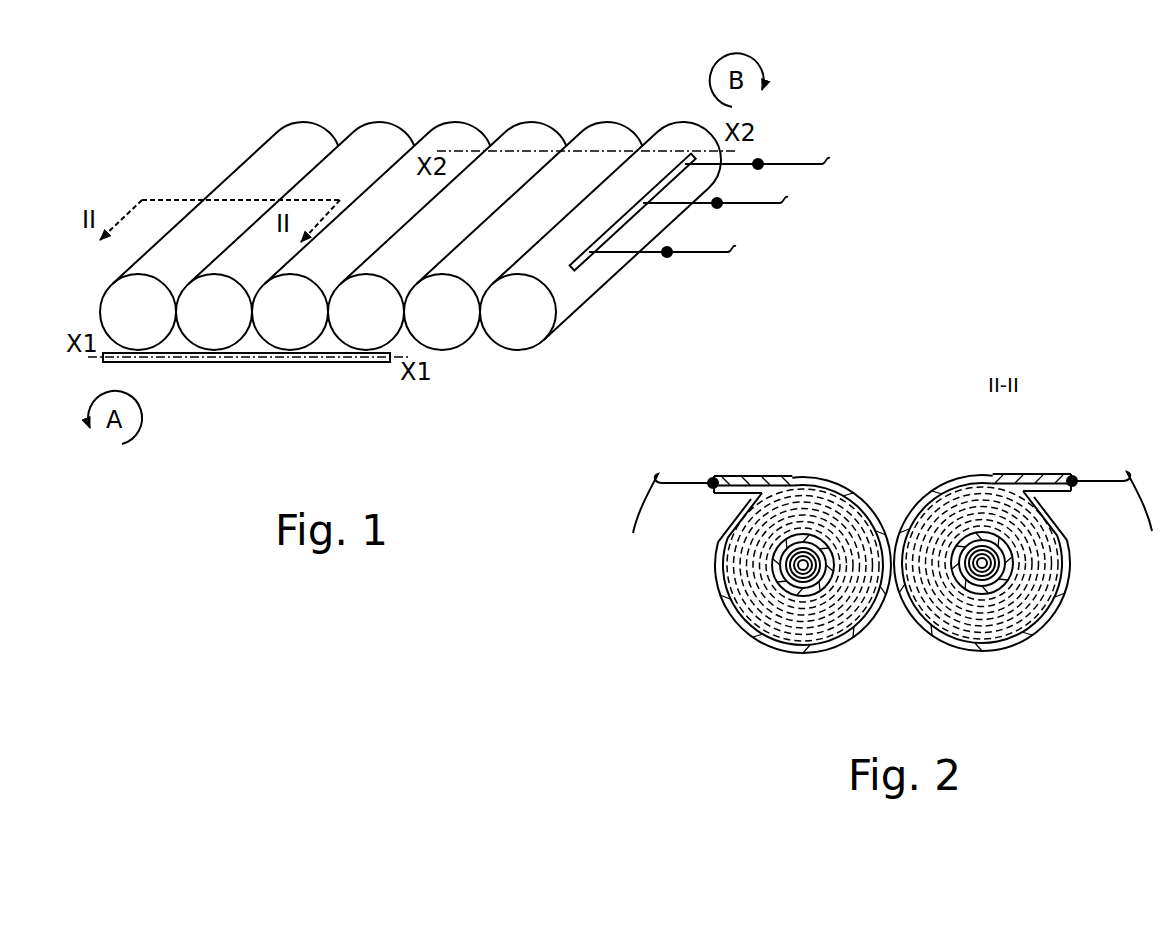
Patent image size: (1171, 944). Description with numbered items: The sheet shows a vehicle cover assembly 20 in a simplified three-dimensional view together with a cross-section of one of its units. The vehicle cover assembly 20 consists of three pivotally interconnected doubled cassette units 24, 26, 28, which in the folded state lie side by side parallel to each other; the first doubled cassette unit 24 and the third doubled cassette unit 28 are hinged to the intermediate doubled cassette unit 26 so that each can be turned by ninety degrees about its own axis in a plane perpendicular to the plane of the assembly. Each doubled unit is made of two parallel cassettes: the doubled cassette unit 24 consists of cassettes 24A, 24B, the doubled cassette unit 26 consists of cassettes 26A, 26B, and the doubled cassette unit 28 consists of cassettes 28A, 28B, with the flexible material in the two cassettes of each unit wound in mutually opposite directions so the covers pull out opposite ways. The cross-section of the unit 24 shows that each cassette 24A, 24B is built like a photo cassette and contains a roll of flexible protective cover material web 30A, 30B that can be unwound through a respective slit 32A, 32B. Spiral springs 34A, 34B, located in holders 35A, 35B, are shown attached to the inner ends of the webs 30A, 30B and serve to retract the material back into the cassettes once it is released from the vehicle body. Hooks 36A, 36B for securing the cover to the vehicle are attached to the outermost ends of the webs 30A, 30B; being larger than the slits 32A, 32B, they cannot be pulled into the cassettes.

In FIG. 1, the vehicle cover assembly 20 is at (526, 79).
In FIG. 1, the doubled cassette unit 24 is at (361, 113).
In FIG. 1, the cassette 24A is at (292, 150).
In FIG. 2, the cassette 24A is at (857, 483).
In FIG. 1, the cassette 24B is at (357, 150).
In FIG. 2, the cassette 24B is at (940, 485).
In FIG. 1, the doubled cassette unit 26 is at (488, 117).
In FIG. 1, the cassette 26A is at (317, 267).
In FIG. 1, the cassette 26B is at (398, 268).
In FIG. 1, the doubled cassette unit 28 is at (643, 110).
In FIG. 1, the cassette 28A is at (490, 267).
In FIG. 1, the cassette 28B is at (555, 260).
In FIG. 2, the flexible protective cover material web 30A is at (803, 503).
In FIG. 2, the flexible protective cover material web 30B is at (1047, 582).
In FIG. 2, the slit 32A is at (745, 478).
In FIG. 2, the slit 32B is at (1035, 478).
In FIG. 2, the spiral spring 34A is at (790, 590).
In FIG. 2, the spiral spring 34B is at (960, 593).
In FIG. 2, the holder 35A is at (773, 575).
In FIG. 2, the holder 35B is at (990, 600).
In FIG. 2, the hook 36A is at (664, 525).
In FIG. 2, the hook 36B is at (1115, 518).